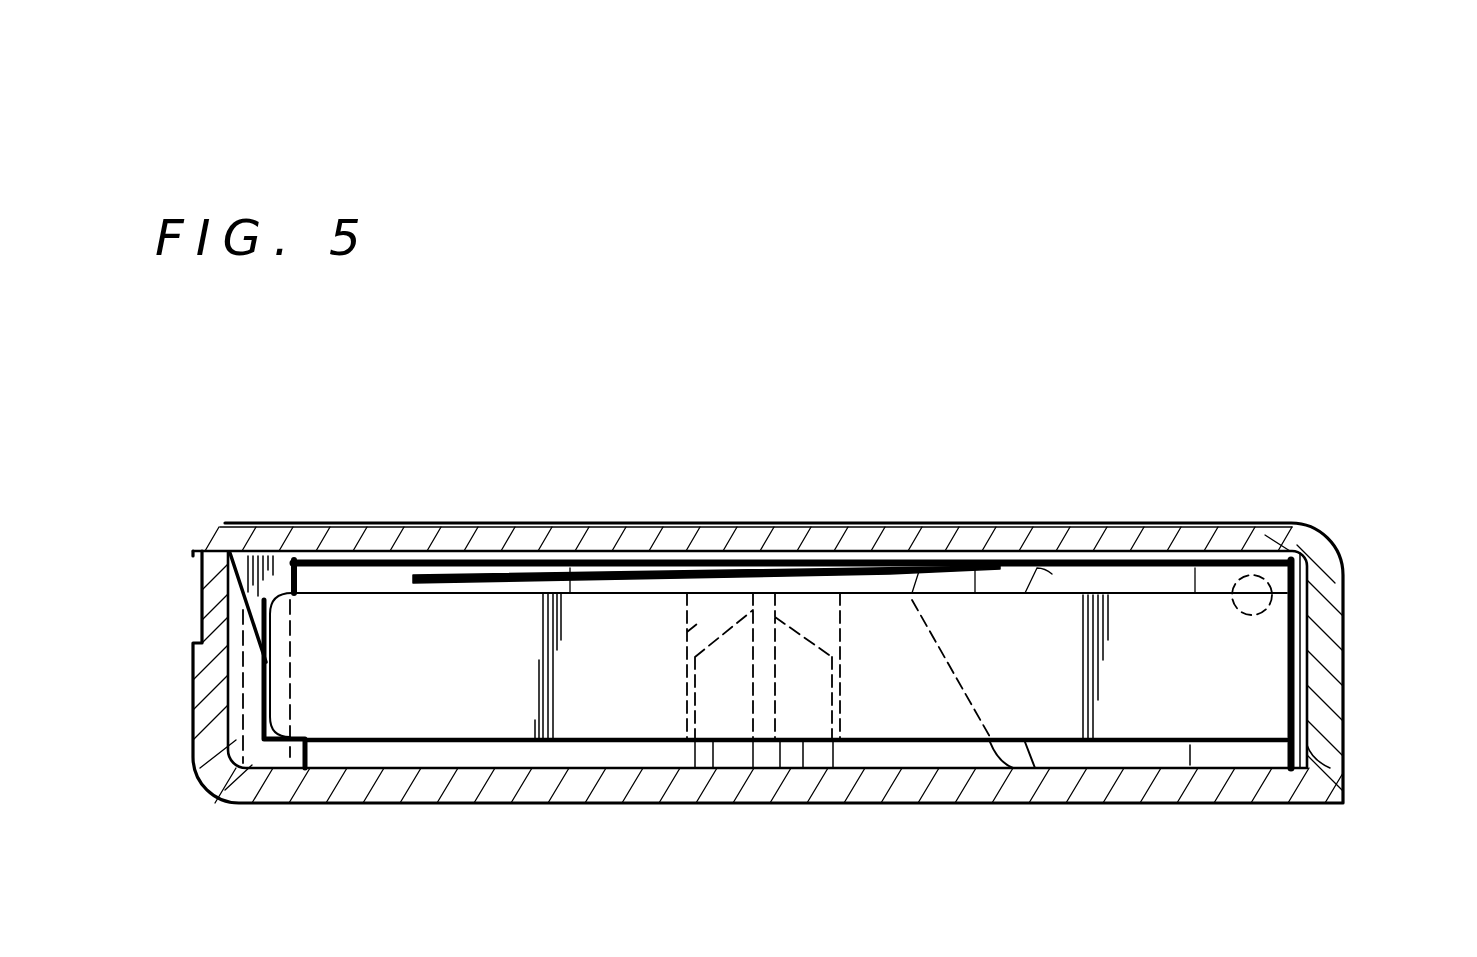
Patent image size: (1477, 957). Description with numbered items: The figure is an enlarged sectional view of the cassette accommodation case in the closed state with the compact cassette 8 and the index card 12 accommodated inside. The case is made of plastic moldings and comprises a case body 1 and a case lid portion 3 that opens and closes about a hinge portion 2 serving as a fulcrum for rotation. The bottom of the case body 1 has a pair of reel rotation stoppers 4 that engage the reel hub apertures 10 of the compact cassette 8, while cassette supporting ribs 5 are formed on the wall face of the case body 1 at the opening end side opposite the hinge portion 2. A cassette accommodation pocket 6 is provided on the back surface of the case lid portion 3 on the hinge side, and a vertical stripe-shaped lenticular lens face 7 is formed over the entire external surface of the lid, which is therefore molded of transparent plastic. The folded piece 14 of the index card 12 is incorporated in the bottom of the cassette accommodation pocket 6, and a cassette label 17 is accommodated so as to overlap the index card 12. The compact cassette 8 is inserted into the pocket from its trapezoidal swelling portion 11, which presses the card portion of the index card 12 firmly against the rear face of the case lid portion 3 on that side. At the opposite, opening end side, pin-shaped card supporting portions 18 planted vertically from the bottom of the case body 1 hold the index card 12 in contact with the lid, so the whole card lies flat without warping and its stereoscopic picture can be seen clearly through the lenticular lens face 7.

The case body 1 is at (562, 800).
The hinge portion 2 is at (1252, 575).
The case lid portion 3 is at (1003, 548).
The reel rotation stopper 4 is at (800, 662).
The cassette supporting rib 5 is at (282, 755).
The cassette accommodation pocket 6 is at (957, 668).
The lenticular lens face 7 is at (857, 545).
The compact cassette 8 is at (567, 592).
The reel hub aperture 10 is at (690, 628).
The swelling portion 11 is at (1136, 590).
The index card 12 is at (352, 553).
The folded piece 14 is at (1303, 660).
The cassette label 17 is at (454, 576).
The card supporting portion 18 is at (262, 570).